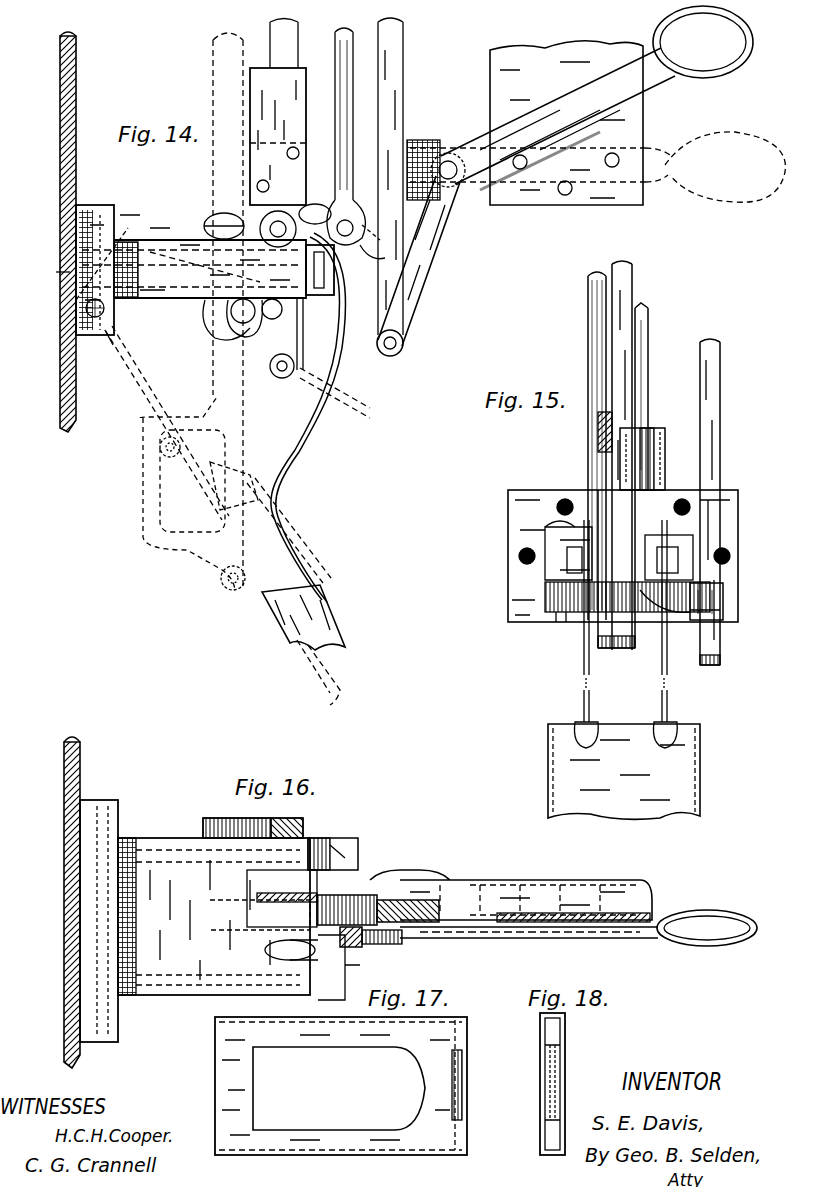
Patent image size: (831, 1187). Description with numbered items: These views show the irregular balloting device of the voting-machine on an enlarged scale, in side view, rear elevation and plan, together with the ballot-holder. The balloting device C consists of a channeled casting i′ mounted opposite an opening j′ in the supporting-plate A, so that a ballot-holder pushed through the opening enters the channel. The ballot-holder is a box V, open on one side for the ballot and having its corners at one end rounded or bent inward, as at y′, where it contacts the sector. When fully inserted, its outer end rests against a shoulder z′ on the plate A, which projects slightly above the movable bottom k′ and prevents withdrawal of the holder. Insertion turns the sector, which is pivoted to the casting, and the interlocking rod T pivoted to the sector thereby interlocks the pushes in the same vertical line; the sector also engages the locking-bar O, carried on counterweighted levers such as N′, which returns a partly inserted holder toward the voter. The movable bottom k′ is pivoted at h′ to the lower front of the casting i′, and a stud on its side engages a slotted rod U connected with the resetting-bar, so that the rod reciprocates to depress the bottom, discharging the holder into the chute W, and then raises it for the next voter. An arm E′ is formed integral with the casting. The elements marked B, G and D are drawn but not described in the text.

In FIG. 14, the supporting-plate A is at (78, 138).
In FIG. 16, the supporting-plate A is at (80, 772).
In FIG. 14, the balloting device C is at (191, 270).
In FIG. 15, the balloting device C is at (623, 541).
In FIG. 16, the balloting device C is at (195, 921).
In FIG. 14, the channeled casting i′ is at (205, 270).
In FIG. 15, the channeled casting i′ is at (565, 545).
In FIG. 16, the channeled casting i′ is at (231, 926).
In FIG. 14, the shoulder z′ is at (105, 255).
In FIG. 14, the opening j′ is at (51, 264).
In FIG. 14, the pivot h′ is at (95, 318).
In FIG. 14, the movable bottom k′ is at (200, 300).
In FIG. 15, the movable bottom k′ is at (545, 592).
In FIG. 14, the rod U is at (276, 26).
In FIG. 15, the rod U is at (714, 398).
In FIG. 16, the rod U is at (300, 816).
In FIG. 14, the standard B is at (278, 136).
In FIG. 15, the standard B is at (648, 336).
In FIG. 16, the standard B is at (257, 897).
In FIG. 14, the locking-bar O is at (412, 74).
In FIG. 15, the locking-bar O is at (626, 272).
In FIG. 16, the locking-bar O is at (408, 912).
In FIG. 14, the interlocking rod T is at (353, 30).
In FIG. 15, the interlocking rod T is at (590, 308).
In FIG. 16, the interlocking rod T is at (362, 940).
In FIG. 14, the box V is at (308, 523).
In FIG. 15, the box V is at (560, 542).
In FIG. 16, the box V is at (322, 850).
In FIG. 17, the box V is at (215, 1032).
In FIG. 18, the box V is at (541, 1084).
In FIG. 14, the chute W is at (280, 626).
In FIG. 15, the chute W is at (624, 771).
In FIG. 14, the counterweighted lever N′ is at (418, 270).
In FIG. 15, the counterweighted lever N′ is at (598, 455).
In FIG. 16, the counterweighted lever N′ is at (402, 940).
In FIG. 14, the arm E′ is at (421, 145).
In FIG. 15, the arm E′ is at (655, 432).
In FIG. 16, the arm E′ is at (490, 885).
In FIG. 14, the block G is at (566, 123).
In FIG. 15, the block G is at (628, 312).
In FIG. 16, the block G is at (652, 918).
In FIG. 14, the spoon bowl D is at (715, 104).
In FIG. 16, the spoon bowl D is at (707, 935).
In FIG. 17, the rounded corners y′ is at (465, 1080).